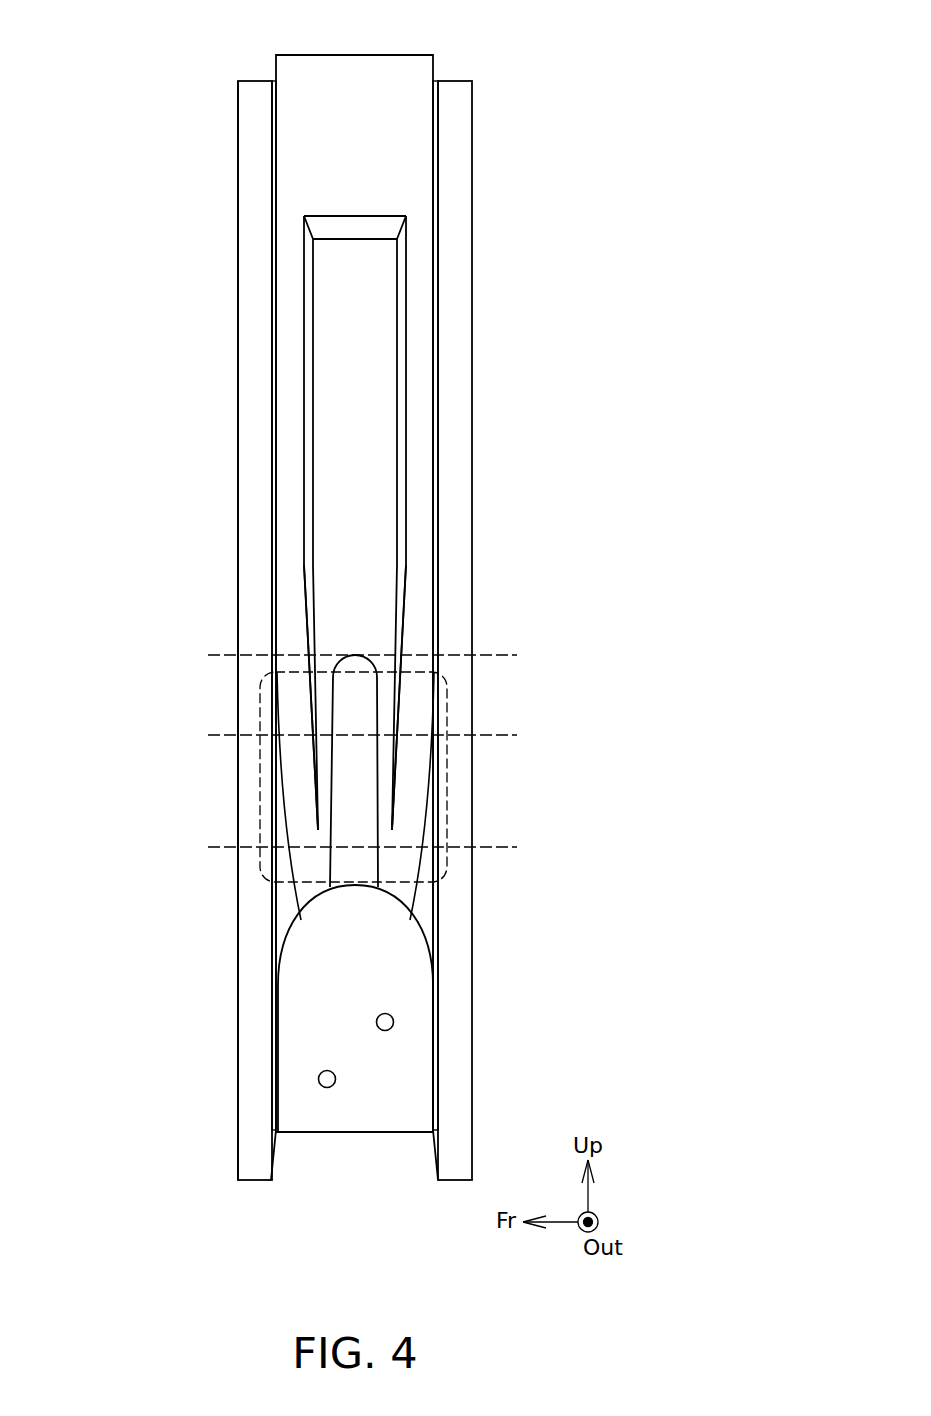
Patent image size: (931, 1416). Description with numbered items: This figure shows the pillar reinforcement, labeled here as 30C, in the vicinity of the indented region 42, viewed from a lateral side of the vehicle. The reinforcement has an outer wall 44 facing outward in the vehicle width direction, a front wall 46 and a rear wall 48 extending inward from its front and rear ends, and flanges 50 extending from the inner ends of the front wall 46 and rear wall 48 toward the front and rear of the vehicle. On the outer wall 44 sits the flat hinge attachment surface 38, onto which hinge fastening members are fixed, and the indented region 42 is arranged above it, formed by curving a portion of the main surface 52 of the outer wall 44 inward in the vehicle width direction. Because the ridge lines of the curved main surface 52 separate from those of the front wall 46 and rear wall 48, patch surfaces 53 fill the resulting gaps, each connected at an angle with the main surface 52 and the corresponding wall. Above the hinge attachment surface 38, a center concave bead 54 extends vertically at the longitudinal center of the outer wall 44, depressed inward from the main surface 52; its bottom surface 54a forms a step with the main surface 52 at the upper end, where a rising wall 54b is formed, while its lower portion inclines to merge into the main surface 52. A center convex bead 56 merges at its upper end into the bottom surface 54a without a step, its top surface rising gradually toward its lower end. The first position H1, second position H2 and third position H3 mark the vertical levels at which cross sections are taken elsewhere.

The bus bar assembly 30C is at (220, 310).
The hinge attachment surface 38 is at (373, 1088).
The indented region 42 is at (447, 808).
The outer wall 44 is at (395, 67).
The front wall 46 is at (272, 85).
The rear wall 48 is at (435, 85).
The flanges 50 is at (253, 100).
The main surface 52 is at (292, 607).
The patch surfaces 53 is at (285, 902).
The center concave bead 54 is at (335, 422).
The bottom surface 54a is at (375, 350).
The rising wall 54b is at (370, 228).
The center convex bead 56 is at (358, 760).
The first position H1 is at (342, 847).
The second position H2 is at (342, 655).
The third position H3 is at (342, 734).